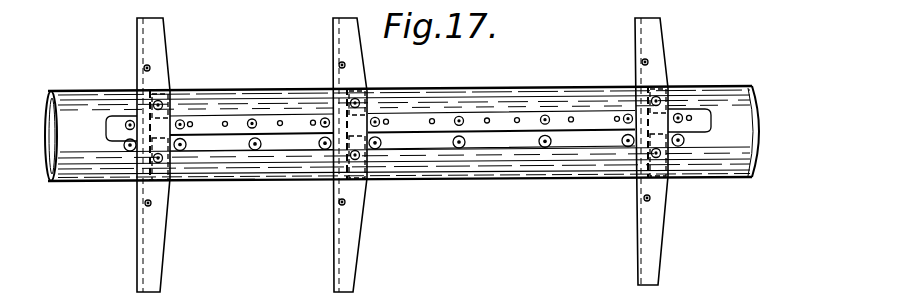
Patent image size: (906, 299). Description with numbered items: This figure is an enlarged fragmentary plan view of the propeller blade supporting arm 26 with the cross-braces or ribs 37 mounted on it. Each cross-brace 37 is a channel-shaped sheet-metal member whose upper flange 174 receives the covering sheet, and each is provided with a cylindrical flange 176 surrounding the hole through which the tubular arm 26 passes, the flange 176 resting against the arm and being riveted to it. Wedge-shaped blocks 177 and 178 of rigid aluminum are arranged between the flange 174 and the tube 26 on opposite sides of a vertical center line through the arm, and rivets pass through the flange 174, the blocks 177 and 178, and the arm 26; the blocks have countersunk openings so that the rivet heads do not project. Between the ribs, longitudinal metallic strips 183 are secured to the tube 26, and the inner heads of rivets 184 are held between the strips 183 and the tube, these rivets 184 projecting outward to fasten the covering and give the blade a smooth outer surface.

The arm 26 is at (93, 167).
The cross-brace 37 is at (166, 174).
The flange 174 is at (156, 258).
The cylindrical flange 176 is at (336, 160).
The wedge-shaped block 177 is at (375, 180).
The wedge-shaped block 178 is at (393, 89).
The longitudinal metallic strip 183 is at (232, 125).
The rivet 184 is at (571, 118).